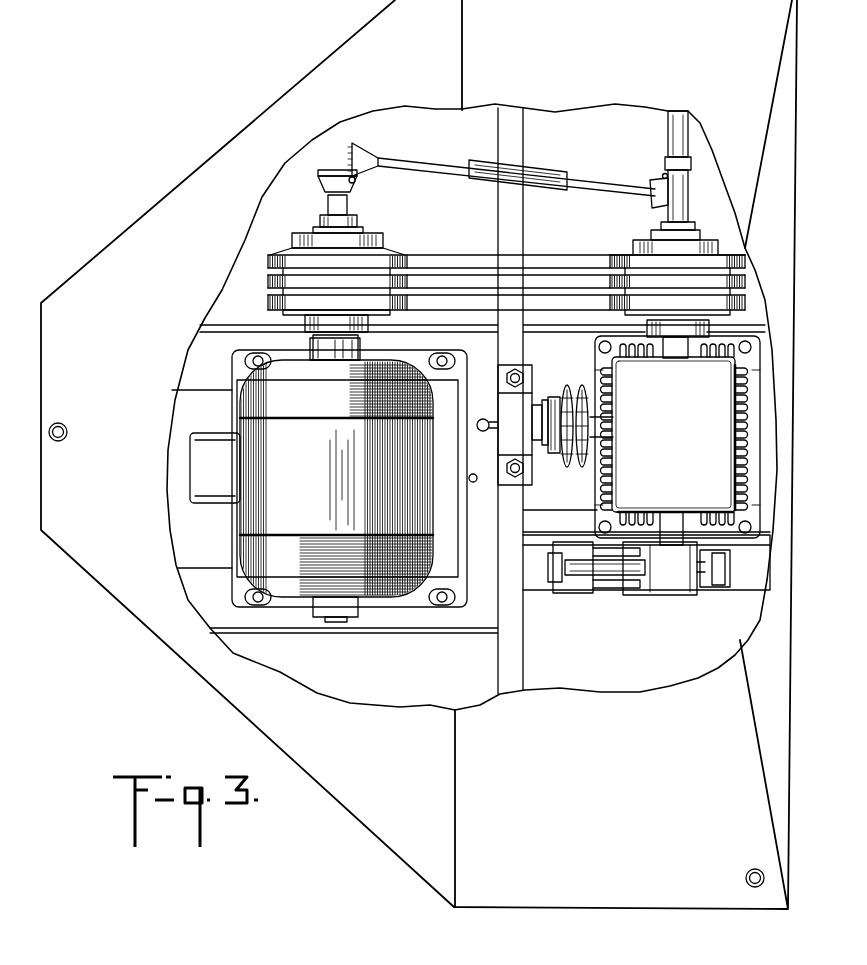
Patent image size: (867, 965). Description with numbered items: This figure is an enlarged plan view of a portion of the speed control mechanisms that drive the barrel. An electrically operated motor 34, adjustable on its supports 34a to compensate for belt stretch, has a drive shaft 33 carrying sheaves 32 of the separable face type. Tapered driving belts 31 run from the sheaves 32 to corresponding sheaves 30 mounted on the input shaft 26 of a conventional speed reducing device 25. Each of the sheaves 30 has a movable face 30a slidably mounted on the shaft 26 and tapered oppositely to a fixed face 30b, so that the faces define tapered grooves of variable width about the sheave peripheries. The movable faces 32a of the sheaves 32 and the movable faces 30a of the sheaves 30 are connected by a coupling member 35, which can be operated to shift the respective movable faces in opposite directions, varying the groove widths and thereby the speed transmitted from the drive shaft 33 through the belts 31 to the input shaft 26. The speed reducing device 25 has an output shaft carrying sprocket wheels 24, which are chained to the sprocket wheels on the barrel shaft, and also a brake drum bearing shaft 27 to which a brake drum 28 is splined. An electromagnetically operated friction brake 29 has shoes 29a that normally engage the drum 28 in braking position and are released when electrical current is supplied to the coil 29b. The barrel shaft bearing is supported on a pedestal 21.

The pedestal 21 is at (580, 791).
The sprocket wheels 24 is at (582, 446).
The speed reducing device 25 is at (720, 400).
The input shaft 26 is at (710, 332).
The brake drum bearing shaft 27 is at (746, 544).
The brake drum 28 is at (670, 588).
The electromagnetically operated friction brake 29 is at (587, 592).
The shoes 29a is at (716, 590).
The coil 29b is at (558, 588).
The sheaves 30 is at (699, 213).
The movable faces 30a is at (705, 252).
The fixed faces 30b is at (736, 300).
The tapered driving belts 31 is at (545, 262).
The sheaves 32 is at (308, 251).
The movable faces 32a is at (275, 233).
The drive shaft 33 is at (362, 336).
The electrically operated motor 34 is at (324, 495).
The supports 34a is at (440, 603).
The coupling member 35 is at (546, 177).